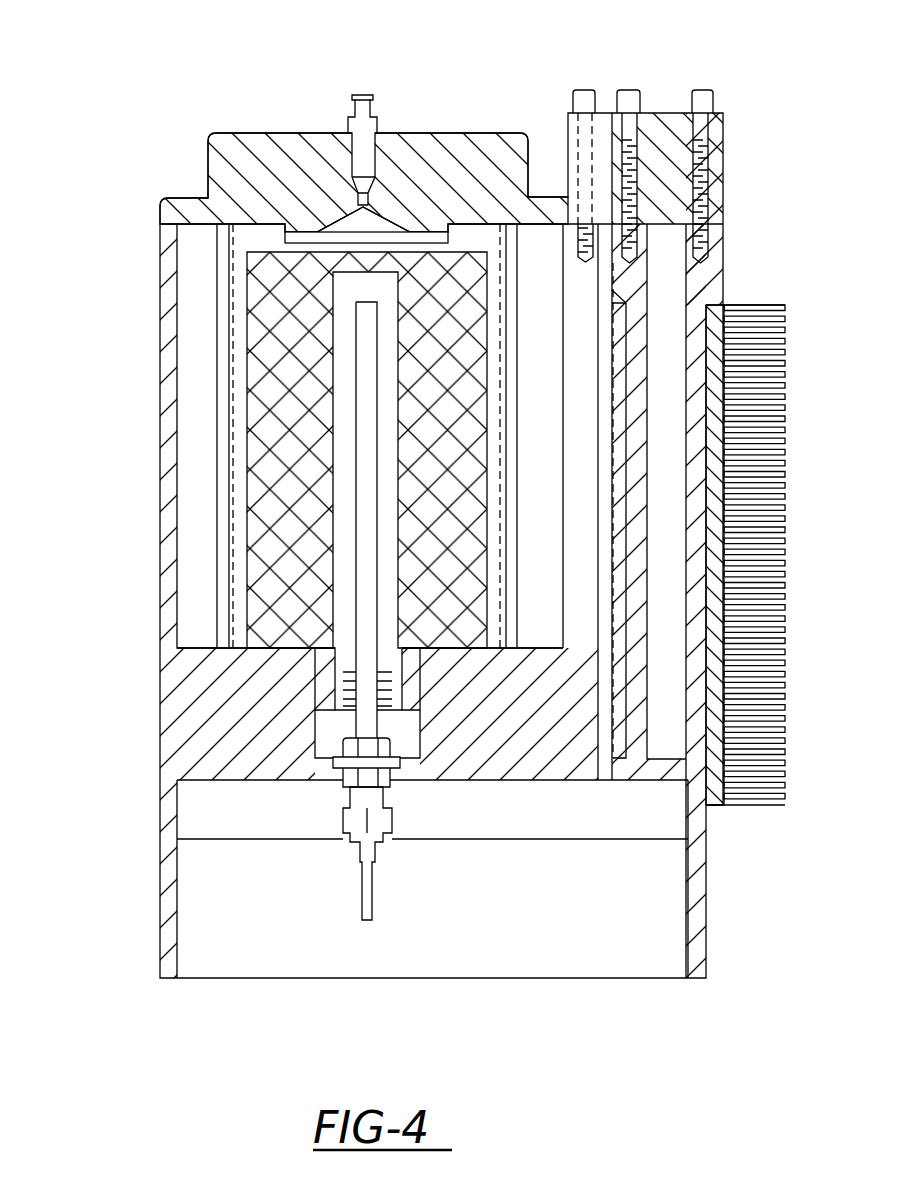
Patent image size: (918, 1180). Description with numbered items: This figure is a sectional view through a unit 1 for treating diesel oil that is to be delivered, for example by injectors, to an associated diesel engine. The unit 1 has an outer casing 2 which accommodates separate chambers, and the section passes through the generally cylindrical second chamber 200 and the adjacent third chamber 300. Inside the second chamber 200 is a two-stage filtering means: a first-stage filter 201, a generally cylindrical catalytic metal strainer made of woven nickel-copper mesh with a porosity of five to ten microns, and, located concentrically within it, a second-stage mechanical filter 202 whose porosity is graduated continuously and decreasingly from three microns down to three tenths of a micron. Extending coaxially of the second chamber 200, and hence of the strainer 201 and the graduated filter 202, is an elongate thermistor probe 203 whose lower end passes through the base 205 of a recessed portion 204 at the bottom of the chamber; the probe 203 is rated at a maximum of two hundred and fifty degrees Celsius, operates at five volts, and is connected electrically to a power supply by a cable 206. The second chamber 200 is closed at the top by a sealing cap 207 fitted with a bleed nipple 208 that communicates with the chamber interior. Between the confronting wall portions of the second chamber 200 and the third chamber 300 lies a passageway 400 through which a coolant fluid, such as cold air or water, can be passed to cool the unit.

The unit 1 is at (130, 122).
The outer casing 2 is at (165, 586).
The second chamber 200 is at (216, 491).
The first-stage filter 201 is at (233, 420).
The second-stage mechanical filter 202 is at (265, 648).
The thermistor probe 203 is at (368, 654).
The recessed portion 204 is at (327, 765).
The base 205 is at (410, 748).
The cable 206 is at (374, 908).
The sealing cap 207 is at (458, 136).
The bleed nipple 208 is at (345, 133).
The third chamber 300 is at (648, 358).
The passageway 400 is at (620, 507).